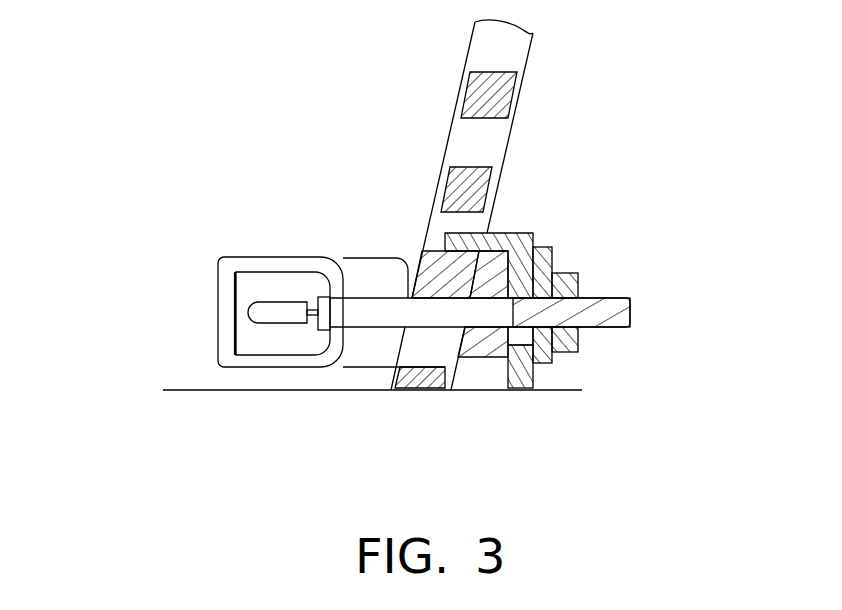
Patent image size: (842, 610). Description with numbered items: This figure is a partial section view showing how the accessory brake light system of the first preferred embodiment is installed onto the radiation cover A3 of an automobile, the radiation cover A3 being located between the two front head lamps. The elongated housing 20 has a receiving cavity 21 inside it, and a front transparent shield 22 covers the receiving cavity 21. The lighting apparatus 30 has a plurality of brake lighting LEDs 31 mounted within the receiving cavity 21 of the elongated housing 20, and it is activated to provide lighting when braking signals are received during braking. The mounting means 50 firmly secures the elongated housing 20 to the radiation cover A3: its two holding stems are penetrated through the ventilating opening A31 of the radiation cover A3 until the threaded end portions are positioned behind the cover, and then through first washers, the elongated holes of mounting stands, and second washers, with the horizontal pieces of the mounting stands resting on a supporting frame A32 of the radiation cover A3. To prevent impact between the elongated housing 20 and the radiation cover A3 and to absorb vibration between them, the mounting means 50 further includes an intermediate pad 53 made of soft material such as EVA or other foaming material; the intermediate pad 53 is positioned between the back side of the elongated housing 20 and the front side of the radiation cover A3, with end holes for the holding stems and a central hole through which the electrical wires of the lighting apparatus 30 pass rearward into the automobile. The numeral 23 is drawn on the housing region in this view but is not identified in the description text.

The elongated housing 20 is at (262, 253).
The receiving cavity 21 is at (265, 345).
The front transparent shield 22 is at (228, 328).
The housing extension 23 is at (357, 343).
The lighting apparatus 30 is at (284, 287).
The brake lighting LEDs 31 is at (262, 310).
The intermediate pad 53 is at (358, 283).
The mounting means 50 is at (547, 241).
The radiation cover A3 is at (524, 66).
The ventilating opening A31 is at (478, 142).
The supporting frame A32 is at (457, 267).